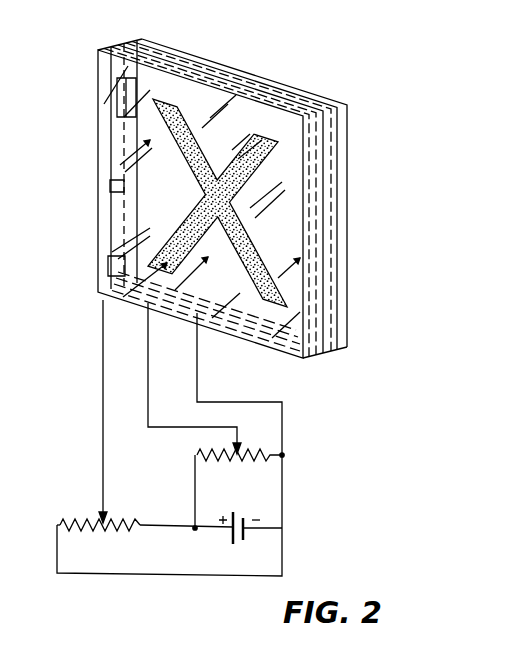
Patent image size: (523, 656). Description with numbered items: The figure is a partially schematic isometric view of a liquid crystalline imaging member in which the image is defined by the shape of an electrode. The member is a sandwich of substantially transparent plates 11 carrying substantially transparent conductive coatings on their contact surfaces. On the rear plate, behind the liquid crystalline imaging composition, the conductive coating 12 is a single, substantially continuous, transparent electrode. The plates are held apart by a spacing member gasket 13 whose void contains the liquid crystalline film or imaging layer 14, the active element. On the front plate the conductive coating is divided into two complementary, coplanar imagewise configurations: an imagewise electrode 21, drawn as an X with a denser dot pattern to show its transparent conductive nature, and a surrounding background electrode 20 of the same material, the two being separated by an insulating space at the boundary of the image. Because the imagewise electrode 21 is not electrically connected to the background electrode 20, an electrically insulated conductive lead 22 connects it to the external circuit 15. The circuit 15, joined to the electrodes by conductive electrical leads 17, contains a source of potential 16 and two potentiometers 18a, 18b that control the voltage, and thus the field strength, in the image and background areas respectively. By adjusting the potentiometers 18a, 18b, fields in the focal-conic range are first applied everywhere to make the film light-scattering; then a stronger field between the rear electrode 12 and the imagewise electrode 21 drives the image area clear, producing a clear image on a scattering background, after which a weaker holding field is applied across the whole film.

The substantially transparent plates 11 is at (100, 50).
The substantially transparent conductive coating 12 is at (237, 77).
The spacing member gasket 13 is at (117, 48).
The liquid crystalline film or imaging layer 14 is at (277, 92).
The external circuit 15 is at (283, 553).
The source of potential 16 is at (237, 542).
The conductive electrical leads 17 is at (103, 362).
The potentiometer 18a is at (103, 530).
The potentiometer 18b is at (240, 460).
The background electrode 20 is at (108, 186).
The imagewise electrode 21 is at (112, 107).
The electrically insulated conductive lead 22 is at (105, 262).